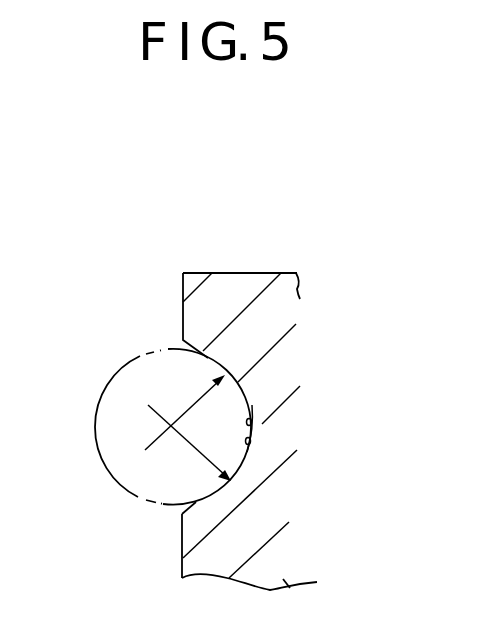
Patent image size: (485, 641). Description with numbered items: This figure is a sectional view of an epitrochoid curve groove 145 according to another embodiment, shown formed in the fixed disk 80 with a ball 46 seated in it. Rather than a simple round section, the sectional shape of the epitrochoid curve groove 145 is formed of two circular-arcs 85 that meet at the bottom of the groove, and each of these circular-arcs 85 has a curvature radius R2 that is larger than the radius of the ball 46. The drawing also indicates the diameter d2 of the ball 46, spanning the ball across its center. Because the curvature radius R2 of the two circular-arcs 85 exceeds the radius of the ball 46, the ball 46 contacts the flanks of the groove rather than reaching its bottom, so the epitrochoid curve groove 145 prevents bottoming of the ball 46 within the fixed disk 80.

The fixed disk 80 is at (260, 273).
The ball 46 is at (97, 447).
The circular-arcs 85 is at (257, 430).
The epitrochoid curve groove 145 is at (209, 366).
The ball diameter d2 is at (195, 413).
The curvature radius R2 is at (185, 437).